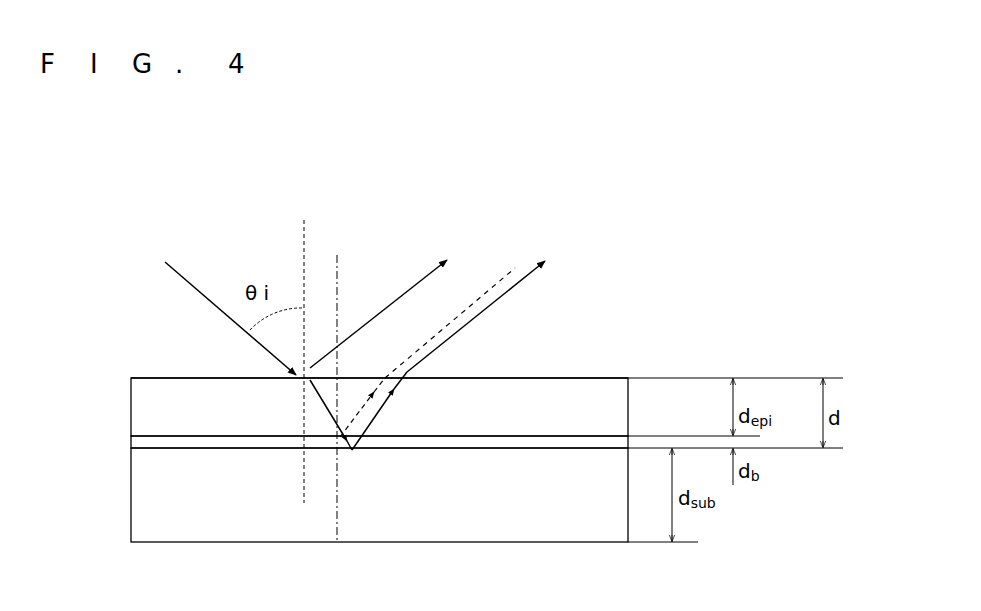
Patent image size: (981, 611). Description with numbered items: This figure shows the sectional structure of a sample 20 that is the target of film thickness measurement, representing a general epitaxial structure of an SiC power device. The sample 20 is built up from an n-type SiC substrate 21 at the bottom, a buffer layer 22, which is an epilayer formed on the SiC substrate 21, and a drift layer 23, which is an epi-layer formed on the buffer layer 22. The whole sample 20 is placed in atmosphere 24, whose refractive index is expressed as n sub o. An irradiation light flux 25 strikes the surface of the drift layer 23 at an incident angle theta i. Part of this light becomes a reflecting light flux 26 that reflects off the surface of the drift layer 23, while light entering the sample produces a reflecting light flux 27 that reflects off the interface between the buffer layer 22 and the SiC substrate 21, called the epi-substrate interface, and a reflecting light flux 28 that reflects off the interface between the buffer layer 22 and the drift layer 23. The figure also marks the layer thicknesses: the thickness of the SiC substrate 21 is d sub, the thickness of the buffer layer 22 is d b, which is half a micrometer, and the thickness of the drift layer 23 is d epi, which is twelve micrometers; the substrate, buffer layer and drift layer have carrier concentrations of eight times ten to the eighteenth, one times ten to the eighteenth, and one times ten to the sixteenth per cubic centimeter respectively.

The sample 20 is at (323, 442).
The n-type SiC substrate 21 is at (148, 500).
The buffer layer 22 is at (145, 443).
The drift layer 23 is at (145, 412).
The atmosphere 24 is at (198, 378).
The irradiation light flux 25 is at (218, 307).
The reflecting light flux 26 is at (384, 301).
The reflecting light flux 27 is at (444, 348).
The reflecting light flux 28 is at (435, 340).